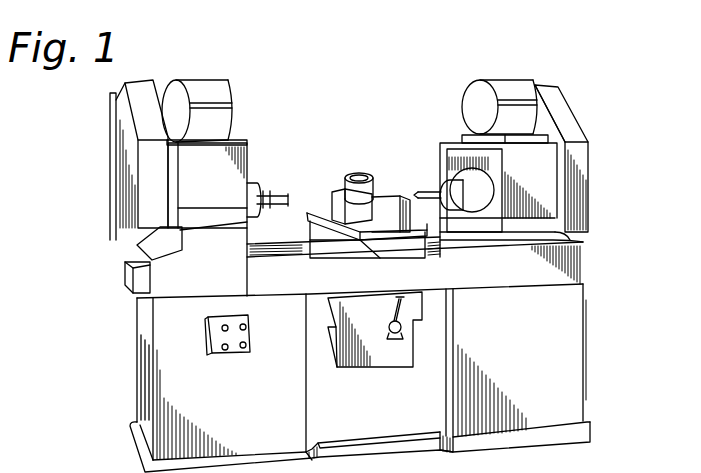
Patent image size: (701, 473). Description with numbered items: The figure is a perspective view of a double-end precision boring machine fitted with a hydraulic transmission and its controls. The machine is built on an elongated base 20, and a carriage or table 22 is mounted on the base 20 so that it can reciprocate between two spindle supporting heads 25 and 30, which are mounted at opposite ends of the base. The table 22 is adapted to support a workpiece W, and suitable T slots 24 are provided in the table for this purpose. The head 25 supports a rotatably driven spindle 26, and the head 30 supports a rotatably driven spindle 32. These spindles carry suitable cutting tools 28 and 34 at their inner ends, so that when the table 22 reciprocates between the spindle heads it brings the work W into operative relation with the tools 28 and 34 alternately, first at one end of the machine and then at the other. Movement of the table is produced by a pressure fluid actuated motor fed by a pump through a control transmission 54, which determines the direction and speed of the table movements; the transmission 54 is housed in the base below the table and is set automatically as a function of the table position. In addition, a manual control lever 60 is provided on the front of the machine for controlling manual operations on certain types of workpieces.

The base 20 is at (570, 418).
The table 22 is at (306, 262).
The T slots 24 is at (340, 250).
The spindle supporting head 25 is at (538, 196).
The spindle 26 is at (440, 183).
The cutting tool 28 is at (418, 195).
The spindle supporting head 30 is at (232, 169).
The spindle 32 is at (253, 195).
The cutting tool 34 is at (290, 200).
The control transmission 54 is at (399, 356).
The manual control lever 60 is at (389, 313).
The workpiece W is at (373, 176).